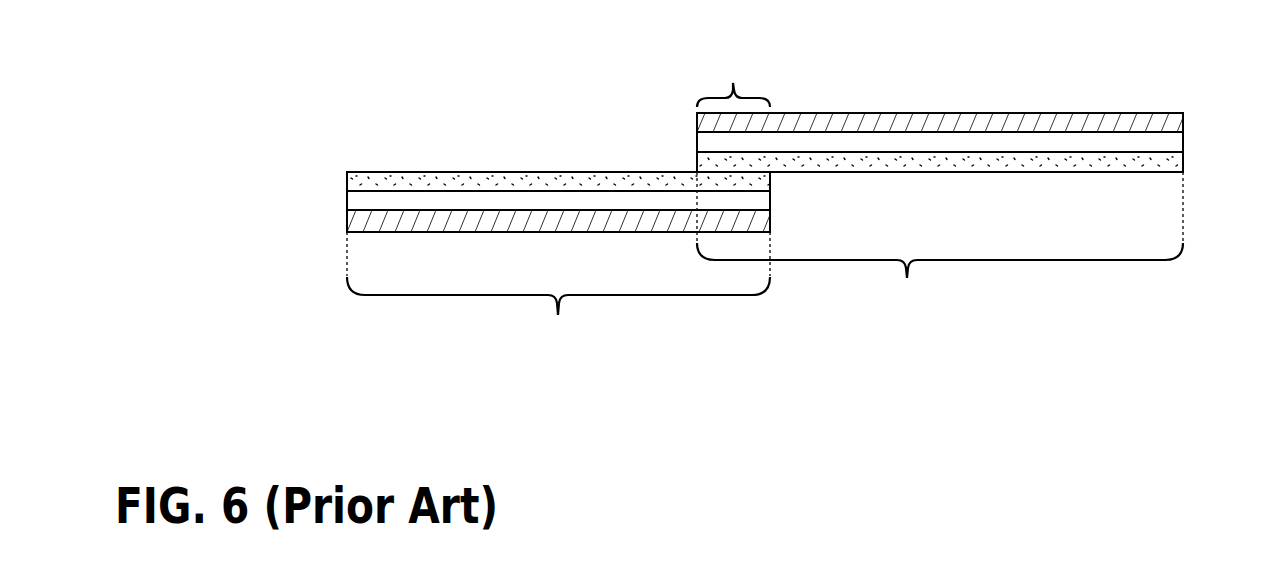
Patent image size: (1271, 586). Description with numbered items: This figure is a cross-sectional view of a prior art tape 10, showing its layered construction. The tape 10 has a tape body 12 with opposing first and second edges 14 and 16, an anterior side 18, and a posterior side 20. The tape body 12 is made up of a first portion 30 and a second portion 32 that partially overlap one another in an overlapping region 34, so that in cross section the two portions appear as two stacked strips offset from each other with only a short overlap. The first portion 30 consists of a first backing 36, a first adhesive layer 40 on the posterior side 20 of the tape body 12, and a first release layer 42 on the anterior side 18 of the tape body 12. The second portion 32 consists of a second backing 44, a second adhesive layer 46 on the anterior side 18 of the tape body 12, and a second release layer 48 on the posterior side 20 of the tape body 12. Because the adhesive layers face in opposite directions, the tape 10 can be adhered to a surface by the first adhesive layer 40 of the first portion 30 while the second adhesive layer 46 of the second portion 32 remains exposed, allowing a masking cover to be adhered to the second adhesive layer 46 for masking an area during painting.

The tape 10 is at (350, 99).
The tape body 12 is at (300, 179).
The first edge 14 is at (1183, 157).
The second edge 16 is at (347, 190).
The anterior side 18 is at (627, 142).
The posterior side 20 is at (874, 199).
The first portion 30 is at (940, 242).
The second portion 32 is at (558, 290).
The overlapping region 34 is at (733, 75).
The first backing 36 is at (1095, 142).
The first adhesive layer 40 is at (1088, 172).
The first release layer 42 is at (928, 117).
The second backing 44 is at (495, 202).
The second adhesive layer 46 is at (438, 177).
The second release layer 48 is at (503, 229).